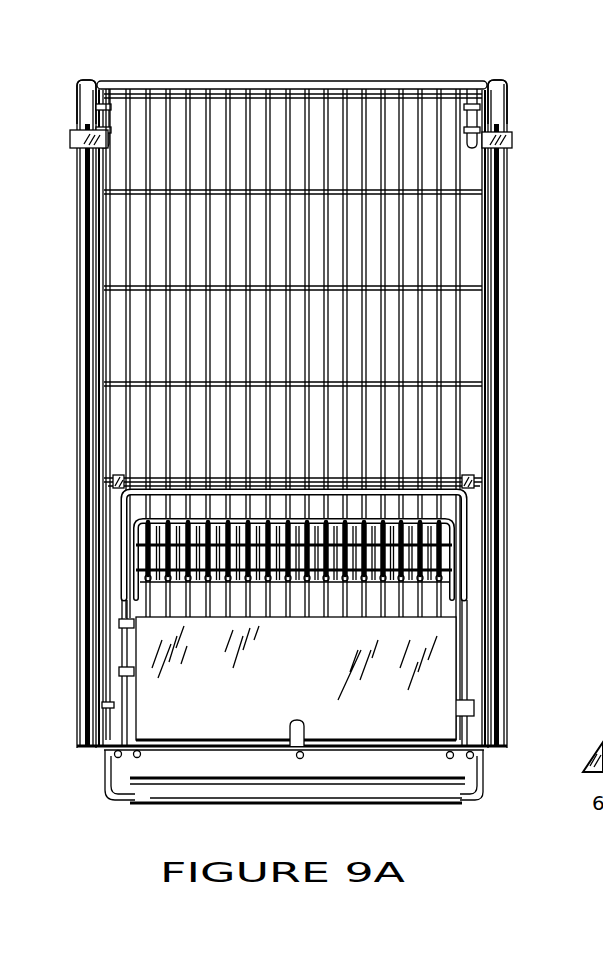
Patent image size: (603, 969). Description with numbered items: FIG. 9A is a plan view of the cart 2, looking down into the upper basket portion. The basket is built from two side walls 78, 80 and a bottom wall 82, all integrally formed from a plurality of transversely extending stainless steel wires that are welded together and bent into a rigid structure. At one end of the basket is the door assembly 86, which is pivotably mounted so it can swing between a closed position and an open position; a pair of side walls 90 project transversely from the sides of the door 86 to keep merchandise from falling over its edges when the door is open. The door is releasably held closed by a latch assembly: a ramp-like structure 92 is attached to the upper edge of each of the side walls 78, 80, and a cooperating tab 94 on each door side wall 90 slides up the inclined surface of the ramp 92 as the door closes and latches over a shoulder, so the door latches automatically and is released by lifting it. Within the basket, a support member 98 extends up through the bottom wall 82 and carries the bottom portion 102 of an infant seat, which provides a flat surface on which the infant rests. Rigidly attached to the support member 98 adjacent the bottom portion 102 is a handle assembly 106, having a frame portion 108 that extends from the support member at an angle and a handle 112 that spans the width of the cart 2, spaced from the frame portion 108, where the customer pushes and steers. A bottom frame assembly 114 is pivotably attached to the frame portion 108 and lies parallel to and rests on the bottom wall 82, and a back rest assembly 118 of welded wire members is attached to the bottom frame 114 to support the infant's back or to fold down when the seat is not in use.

The apparatus 2 is at (514, 473).
The side wall 78 is at (74, 394).
The side wall 80 is at (514, 392).
The bottom wall 82 is at (420, 320).
The door assembly 86 is at (168, 79).
The side walls 90 is at (102, 109).
The ramp-like structure 92 is at (92, 82).
The tab 94 is at (72, 141).
The support member 98 is at (302, 752).
The bottom portion 102 is at (320, 703).
The handle assembly 106 is at (149, 810).
The frame portion 108 is at (263, 755).
The handle 112 is at (365, 806).
The bottom frame assembly 114 is at (463, 608).
The back rest assembly 118 is at (465, 533).